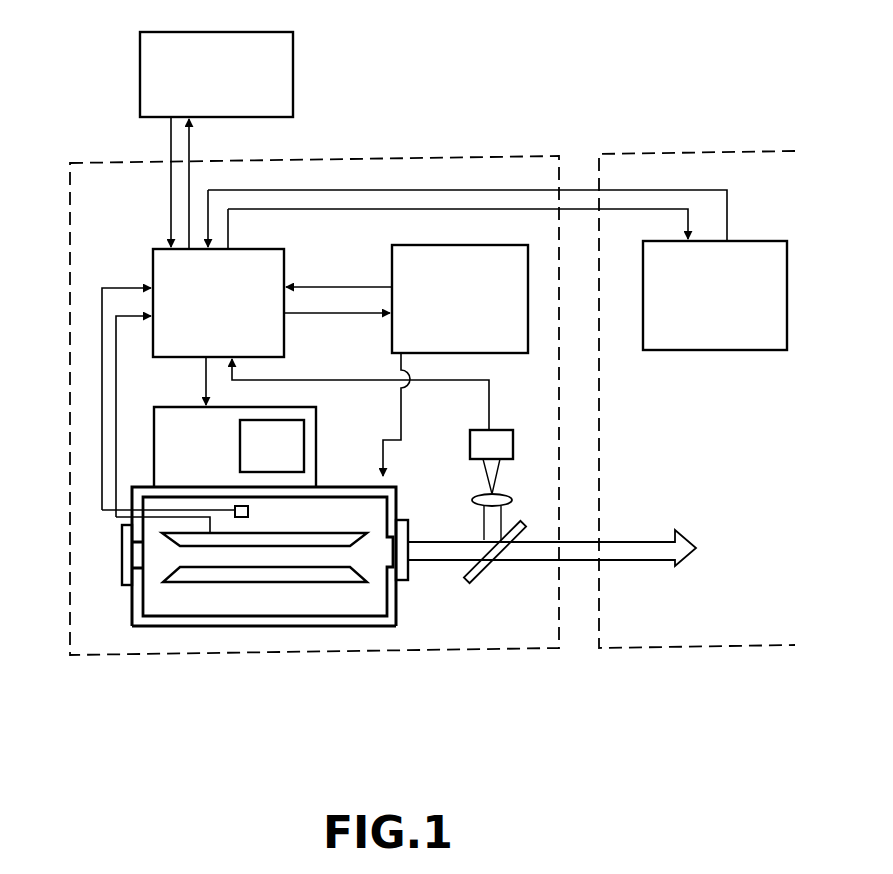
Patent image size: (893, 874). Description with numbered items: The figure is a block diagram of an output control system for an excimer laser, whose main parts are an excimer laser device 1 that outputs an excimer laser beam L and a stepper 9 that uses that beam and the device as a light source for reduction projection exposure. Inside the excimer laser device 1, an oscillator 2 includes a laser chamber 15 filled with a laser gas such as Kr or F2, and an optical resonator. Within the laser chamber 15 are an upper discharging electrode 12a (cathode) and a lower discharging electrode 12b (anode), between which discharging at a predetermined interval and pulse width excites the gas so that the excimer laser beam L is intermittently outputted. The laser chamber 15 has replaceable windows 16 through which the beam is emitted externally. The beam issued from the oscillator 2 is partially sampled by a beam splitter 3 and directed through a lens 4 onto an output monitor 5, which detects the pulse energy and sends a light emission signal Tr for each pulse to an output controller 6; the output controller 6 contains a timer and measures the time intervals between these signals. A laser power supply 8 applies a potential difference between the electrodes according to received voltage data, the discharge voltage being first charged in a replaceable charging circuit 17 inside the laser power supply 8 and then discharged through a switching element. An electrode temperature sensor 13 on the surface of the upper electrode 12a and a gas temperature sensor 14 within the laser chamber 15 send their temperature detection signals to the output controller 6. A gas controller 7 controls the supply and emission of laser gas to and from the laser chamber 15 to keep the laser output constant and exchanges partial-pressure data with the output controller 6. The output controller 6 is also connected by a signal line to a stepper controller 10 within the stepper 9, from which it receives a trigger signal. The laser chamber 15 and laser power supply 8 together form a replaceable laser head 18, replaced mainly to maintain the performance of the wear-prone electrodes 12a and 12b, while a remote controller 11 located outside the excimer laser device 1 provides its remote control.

The excimer laser device 1 is at (100, 637).
The oscillator 2 is at (267, 608).
The beam splitter 3 is at (476, 578).
The lens 4 is at (473, 497).
The output monitor 5 is at (468, 430).
The light emission signal Tr is at (474, 425).
The output controller 6 is at (153, 275).
The gas controller 7 is at (392, 270).
The laser power supply 8 is at (154, 459).
The stepper 9 is at (678, 645).
The stepper controller 10 is at (768, 241).
The remote controller 11 is at (293, 57).
The upper discharging electrode 12a is at (342, 540).
The lower discharging electrode 12b is at (347, 573).
The electrode temperature sensor 13 is at (200, 525).
The gas temperature sensor 14 is at (249, 512).
The laser chamber 15 is at (158, 627).
The window 16 is at (122, 562).
The charging circuit 17 is at (305, 418).
The laser head 18 is at (126, 598).
The excimer laser beam L is at (440, 560).